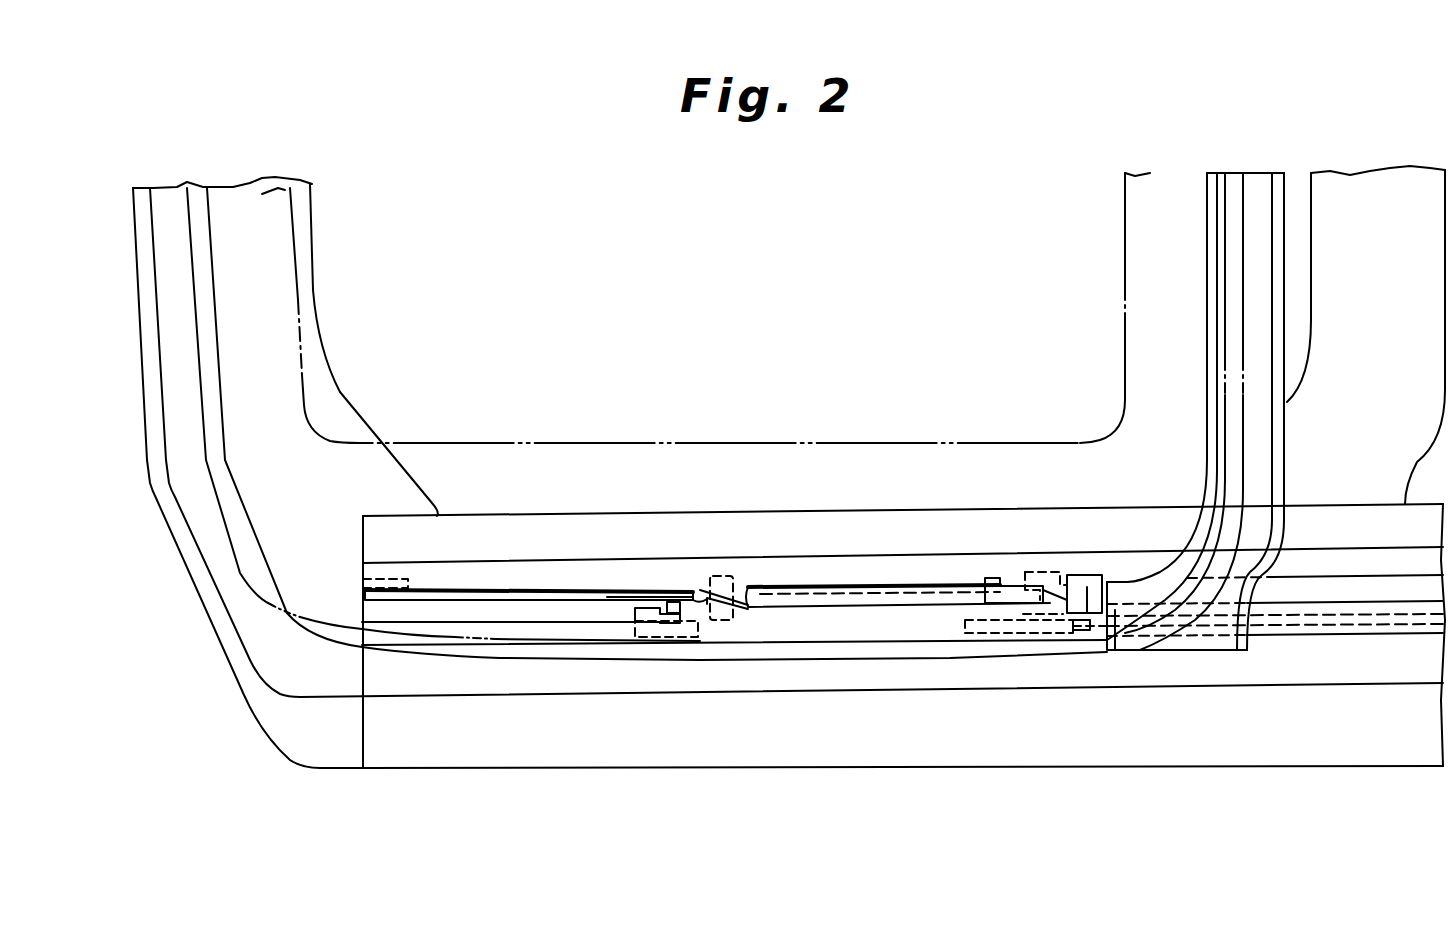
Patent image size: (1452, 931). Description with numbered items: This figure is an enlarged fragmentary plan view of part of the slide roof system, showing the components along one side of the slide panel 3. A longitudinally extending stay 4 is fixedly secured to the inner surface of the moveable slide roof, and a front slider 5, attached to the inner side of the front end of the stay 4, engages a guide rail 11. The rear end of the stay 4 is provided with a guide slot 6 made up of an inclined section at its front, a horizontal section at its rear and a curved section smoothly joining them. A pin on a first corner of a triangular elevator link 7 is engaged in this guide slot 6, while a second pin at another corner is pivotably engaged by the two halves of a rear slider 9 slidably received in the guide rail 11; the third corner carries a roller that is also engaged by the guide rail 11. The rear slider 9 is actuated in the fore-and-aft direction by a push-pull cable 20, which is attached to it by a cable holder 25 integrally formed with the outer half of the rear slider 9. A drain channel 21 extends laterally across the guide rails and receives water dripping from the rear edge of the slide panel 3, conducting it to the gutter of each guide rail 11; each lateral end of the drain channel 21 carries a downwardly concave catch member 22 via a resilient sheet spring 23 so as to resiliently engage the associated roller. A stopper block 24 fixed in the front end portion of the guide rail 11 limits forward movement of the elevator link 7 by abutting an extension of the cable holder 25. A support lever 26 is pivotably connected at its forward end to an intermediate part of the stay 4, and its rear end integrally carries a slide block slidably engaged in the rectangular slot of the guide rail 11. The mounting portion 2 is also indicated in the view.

The front pillar 2 is at (198, 367).
The slide panel 3 is at (195, 229).
The stay 4 is at (877, 603).
The front slider 5 is at (385, 578).
The guide slot 6 is at (935, 588).
The elevator link 7 is at (1022, 595).
The rear slider 9 is at (1058, 572).
The guide rail 11 is at (622, 758).
The push-pull cable 20 is at (1300, 624).
The drain channel 21 is at (1208, 230).
The catch member 22 is at (1088, 575).
The resilient sheet spring 23 is at (1110, 587).
The stopper block 24 is at (665, 637).
The cable holder 25 is at (1047, 634).
The support lever 26 is at (690, 610).